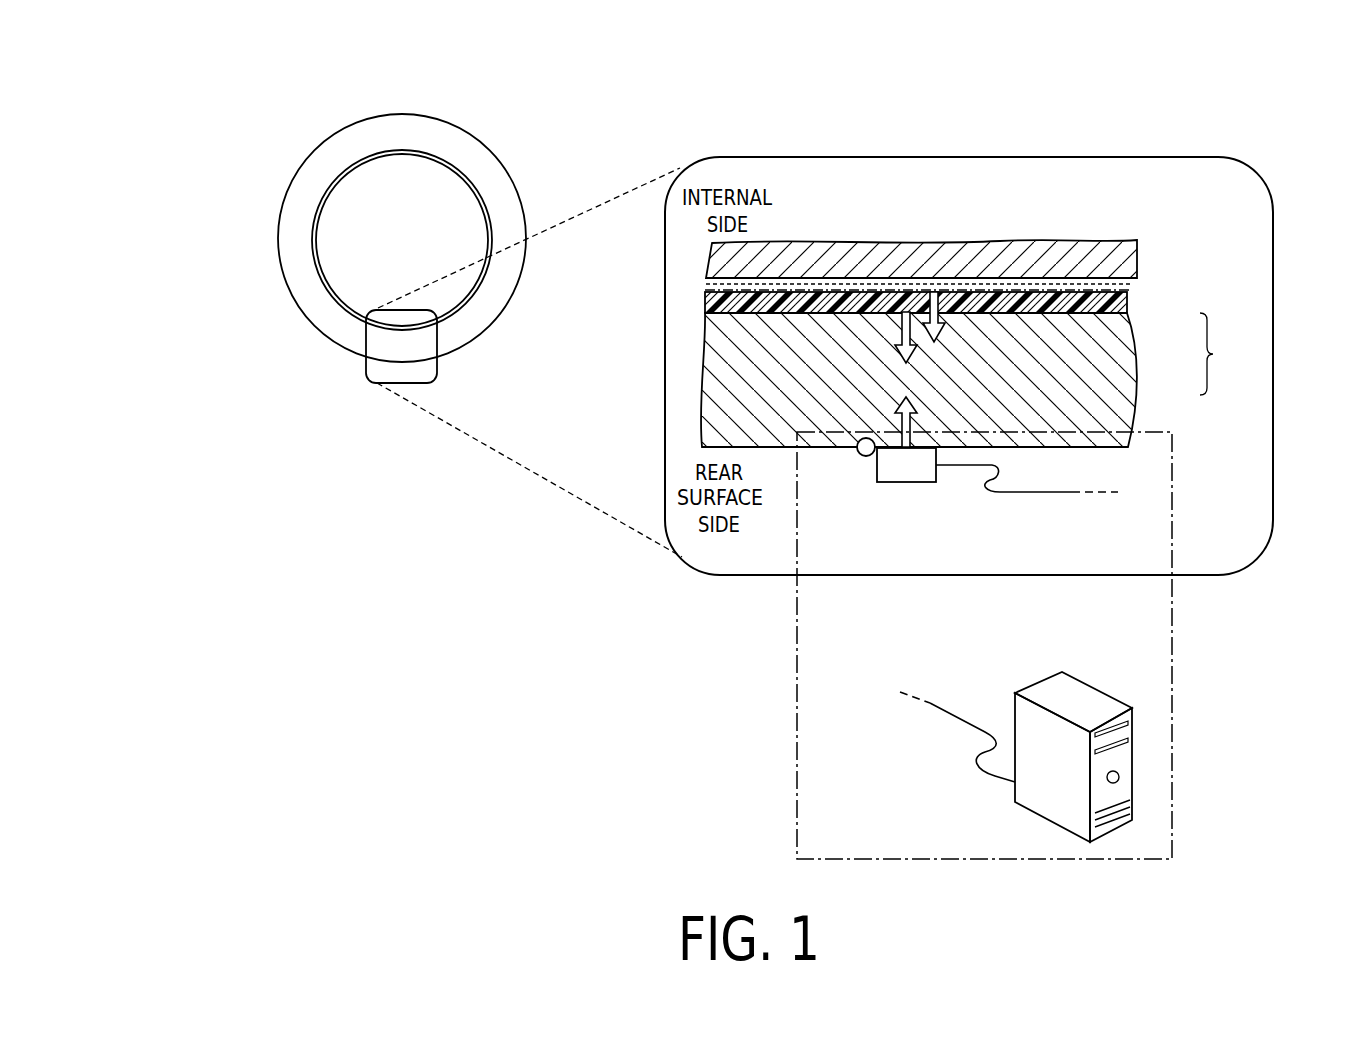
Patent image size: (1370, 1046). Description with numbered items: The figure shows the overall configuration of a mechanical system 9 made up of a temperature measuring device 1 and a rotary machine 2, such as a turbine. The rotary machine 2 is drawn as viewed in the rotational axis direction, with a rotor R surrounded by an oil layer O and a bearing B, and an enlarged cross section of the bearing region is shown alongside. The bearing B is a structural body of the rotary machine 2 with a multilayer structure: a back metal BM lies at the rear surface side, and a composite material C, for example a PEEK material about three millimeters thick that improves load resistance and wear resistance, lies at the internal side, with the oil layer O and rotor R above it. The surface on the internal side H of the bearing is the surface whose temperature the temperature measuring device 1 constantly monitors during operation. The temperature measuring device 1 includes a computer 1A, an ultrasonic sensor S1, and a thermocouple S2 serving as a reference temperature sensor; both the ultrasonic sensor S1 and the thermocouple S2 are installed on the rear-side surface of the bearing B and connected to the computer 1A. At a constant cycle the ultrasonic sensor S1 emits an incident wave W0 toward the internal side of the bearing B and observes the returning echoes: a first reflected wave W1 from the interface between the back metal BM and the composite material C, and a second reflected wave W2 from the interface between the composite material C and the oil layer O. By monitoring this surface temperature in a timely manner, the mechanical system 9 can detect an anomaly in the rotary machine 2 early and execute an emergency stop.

The temperature measuring device 1 is at (1173, 643).
The computer 1A is at (1093, 685).
The rotary machine 2 is at (281, 146).
The mechanical system 9 is at (1150, 108).
The oil layer O is at (433, 158).
The rotor R is at (338, 242).
The bearing B is at (310, 307).
The composite material C is at (1127, 302).
The back metal BM is at (1127, 378).
The surface on the internal side H is at (850, 292).
The first reflected wave W1 is at (898, 358).
The second reflected wave W2 is at (942, 332).
The incident wave W0 is at (917, 403).
The ultrasonic sensor S1 is at (905, 483).
The thermocouple S2 is at (867, 458).